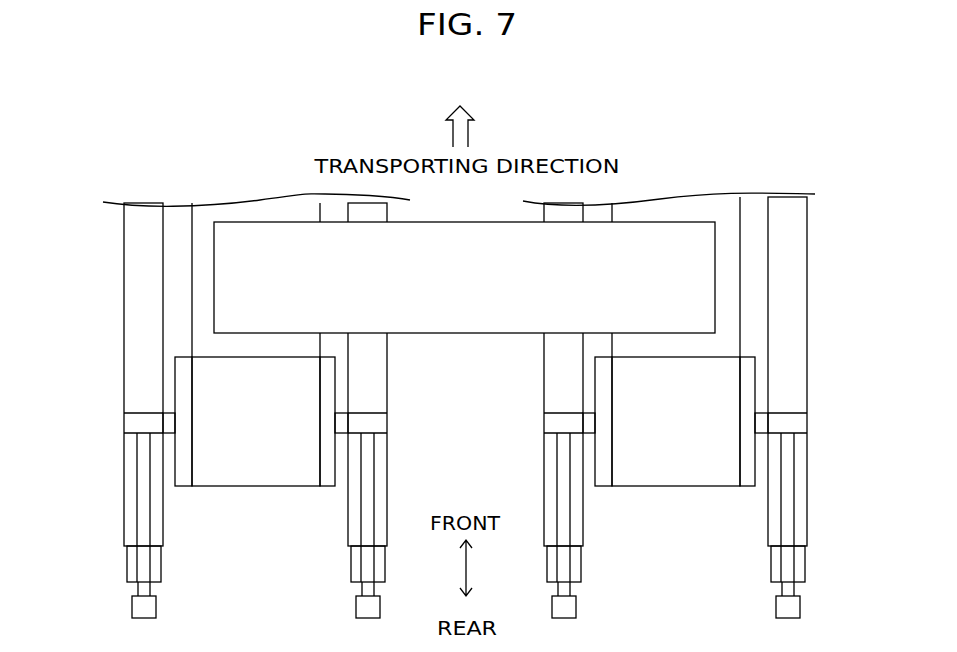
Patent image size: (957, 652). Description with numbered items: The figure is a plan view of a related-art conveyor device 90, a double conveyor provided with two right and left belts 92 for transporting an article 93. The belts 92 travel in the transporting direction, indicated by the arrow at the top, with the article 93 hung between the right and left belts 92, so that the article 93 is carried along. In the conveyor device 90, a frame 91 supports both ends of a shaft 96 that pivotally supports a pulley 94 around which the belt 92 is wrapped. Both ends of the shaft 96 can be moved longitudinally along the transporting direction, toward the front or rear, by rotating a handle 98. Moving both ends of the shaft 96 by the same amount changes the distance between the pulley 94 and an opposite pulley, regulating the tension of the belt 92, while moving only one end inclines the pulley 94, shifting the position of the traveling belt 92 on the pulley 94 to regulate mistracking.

The conveyor device 90 is at (105, 325).
The frame 91 is at (125, 467).
The belt 92 is at (292, 478).
The article 93 is at (415, 322).
The pulley 94 is at (182, 488).
The shaft 96 is at (168, 421).
The handle 98 is at (157, 607).